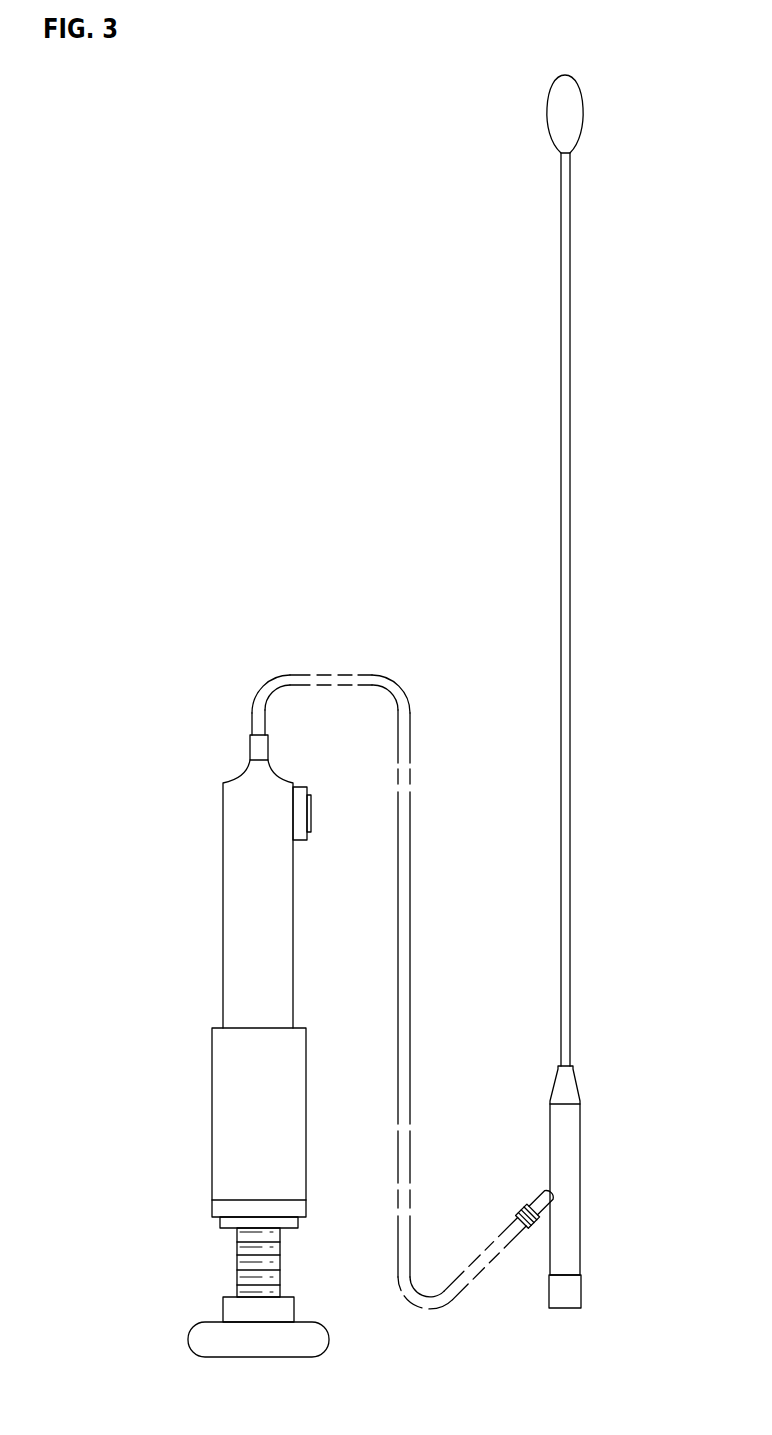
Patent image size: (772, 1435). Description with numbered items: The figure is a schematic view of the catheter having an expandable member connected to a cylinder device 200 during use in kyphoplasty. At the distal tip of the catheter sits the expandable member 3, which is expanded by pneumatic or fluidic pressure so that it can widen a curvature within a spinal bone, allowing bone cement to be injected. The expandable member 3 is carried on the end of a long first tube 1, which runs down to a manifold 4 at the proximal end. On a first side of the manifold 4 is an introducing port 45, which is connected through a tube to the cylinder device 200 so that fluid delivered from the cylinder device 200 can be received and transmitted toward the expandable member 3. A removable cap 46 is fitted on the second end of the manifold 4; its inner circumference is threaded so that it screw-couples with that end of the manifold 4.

The expandable member 3 is at (597, 116).
The first tube 1 is at (571, 563).
The manifold 4 is at (593, 1190).
The removable cap 46 is at (572, 1288).
The introducing port 45 is at (541, 1203).
The cylinder device 200 is at (198, 930).